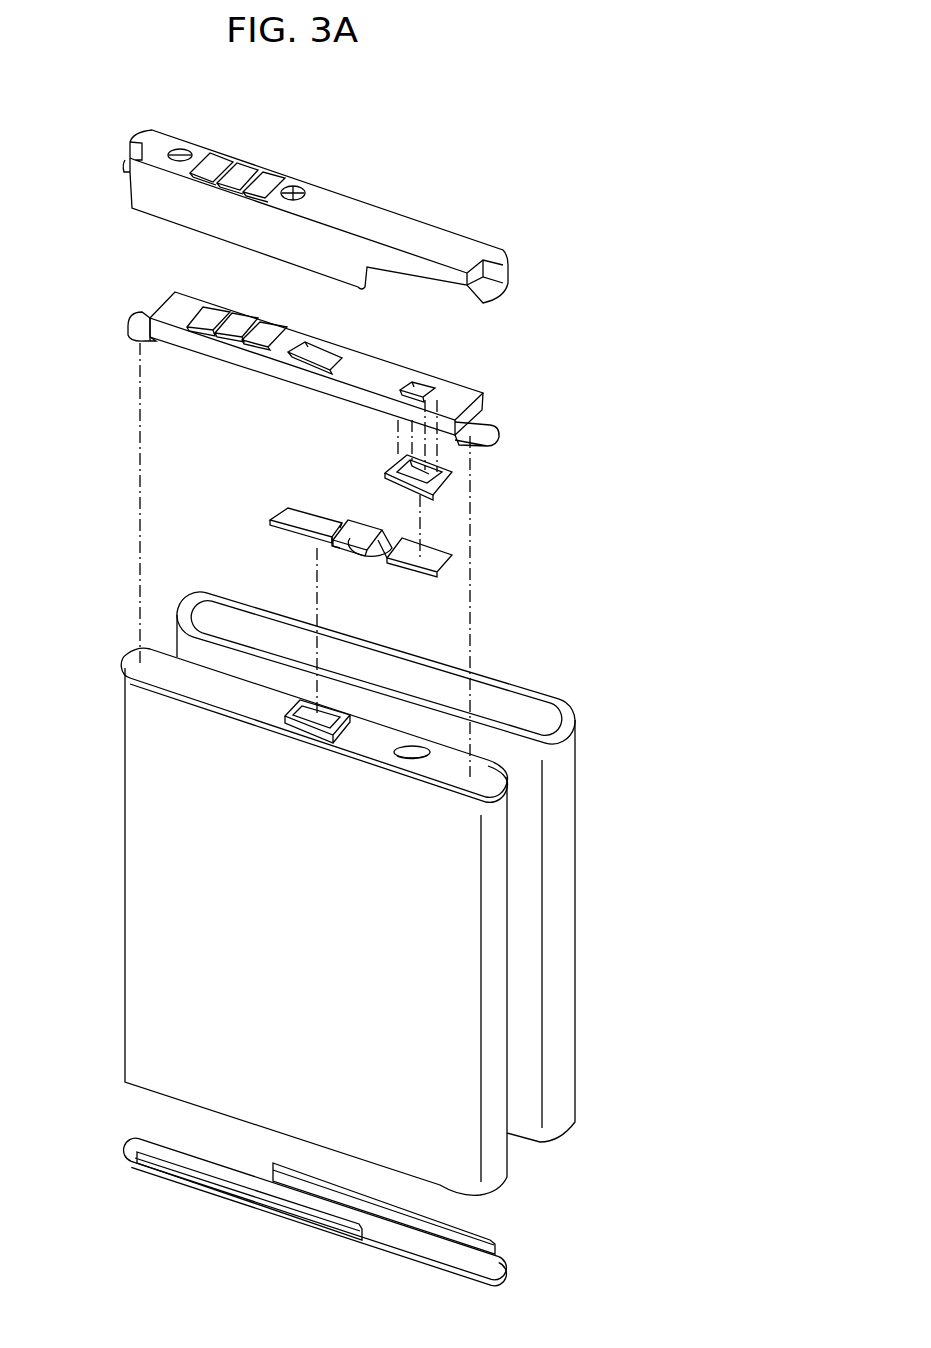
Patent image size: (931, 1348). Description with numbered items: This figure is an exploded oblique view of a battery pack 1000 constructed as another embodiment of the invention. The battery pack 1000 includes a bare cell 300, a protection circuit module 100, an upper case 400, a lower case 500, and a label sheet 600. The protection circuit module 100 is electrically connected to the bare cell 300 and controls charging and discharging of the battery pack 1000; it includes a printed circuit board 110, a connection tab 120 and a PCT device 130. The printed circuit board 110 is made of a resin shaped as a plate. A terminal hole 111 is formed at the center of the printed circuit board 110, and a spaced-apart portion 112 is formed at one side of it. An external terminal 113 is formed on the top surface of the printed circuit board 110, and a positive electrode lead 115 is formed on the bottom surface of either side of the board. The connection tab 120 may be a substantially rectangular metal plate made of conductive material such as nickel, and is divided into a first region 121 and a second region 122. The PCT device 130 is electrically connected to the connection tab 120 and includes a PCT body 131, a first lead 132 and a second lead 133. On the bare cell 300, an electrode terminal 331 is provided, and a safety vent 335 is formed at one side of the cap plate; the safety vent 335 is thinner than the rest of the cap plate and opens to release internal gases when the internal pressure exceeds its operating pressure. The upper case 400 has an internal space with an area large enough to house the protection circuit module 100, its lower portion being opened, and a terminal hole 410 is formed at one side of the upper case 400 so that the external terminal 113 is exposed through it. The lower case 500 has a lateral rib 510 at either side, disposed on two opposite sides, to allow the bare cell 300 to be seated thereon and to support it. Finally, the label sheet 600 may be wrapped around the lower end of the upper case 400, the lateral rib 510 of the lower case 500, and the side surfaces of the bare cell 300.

The battery pack 1000 is at (600, 124).
The upper case 400 is at (366, 208).
The terminal hole 410 is at (244, 166).
The protection circuit module 100 is at (490, 383).
The printed circuit board 110 is at (310, 355).
The terminal hole 111 is at (318, 352).
The spaced-apart portion 112 is at (417, 386).
The external terminal 113 is at (272, 335).
The positive electrode lead 115 is at (135, 326).
The connection tab 120 is at (388, 476).
The first region 121 is at (408, 474).
The second region 122 is at (438, 486).
The PCT device 130 is at (325, 549).
The PCT body 131 is at (370, 548).
The first lead 132 is at (411, 560).
The second lead 133 is at (302, 528).
The bare cell 300 is at (271, 921).
The electrode terminal 331 is at (305, 716).
The safety vent 335 is at (411, 759).
The label sheet 600 is at (574, 849).
The lower case 500 is at (359, 1212).
The lateral rib 510 is at (333, 1194).